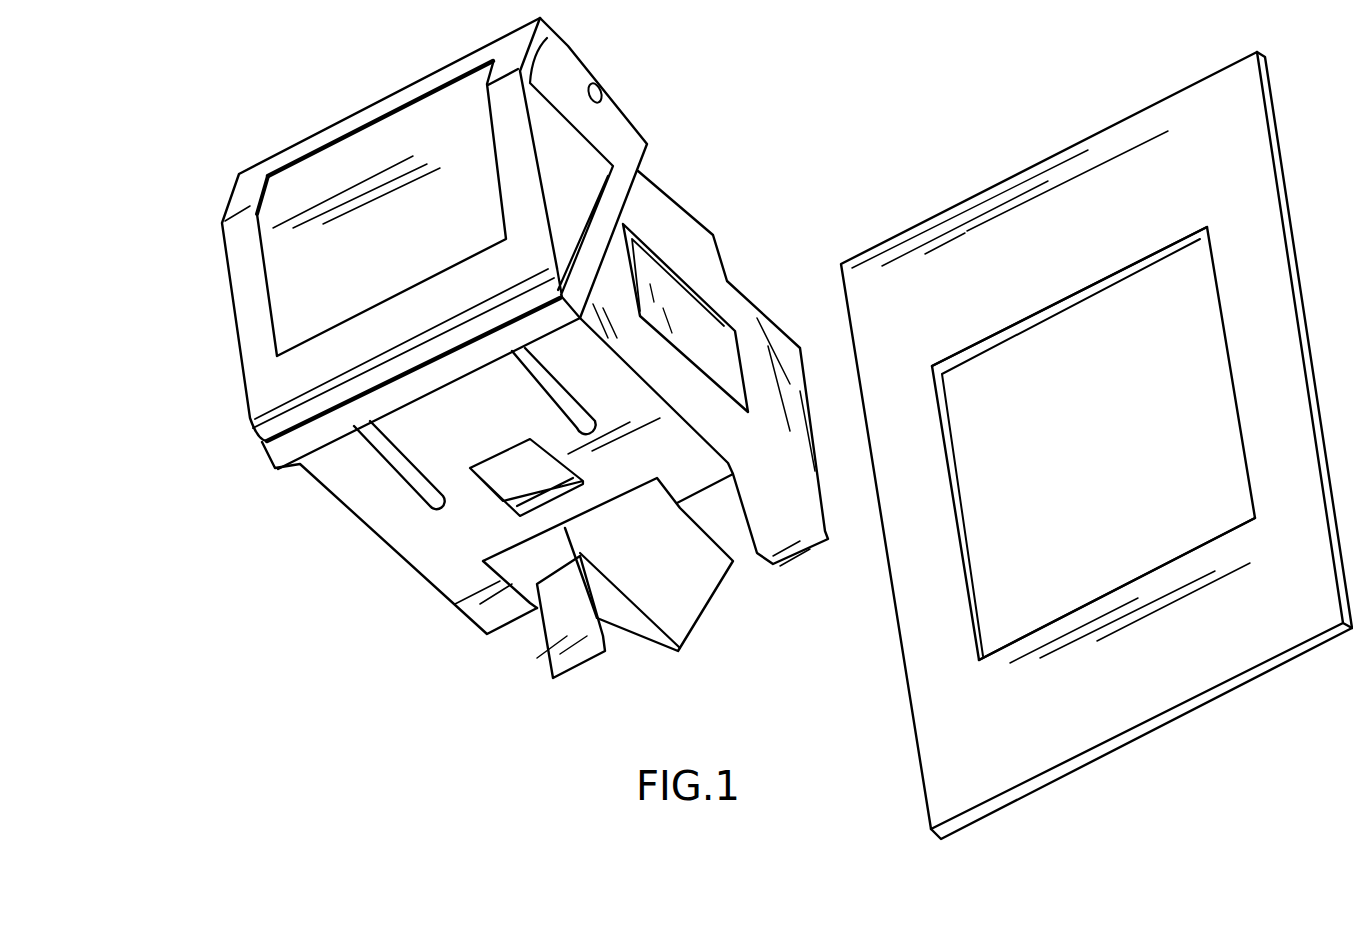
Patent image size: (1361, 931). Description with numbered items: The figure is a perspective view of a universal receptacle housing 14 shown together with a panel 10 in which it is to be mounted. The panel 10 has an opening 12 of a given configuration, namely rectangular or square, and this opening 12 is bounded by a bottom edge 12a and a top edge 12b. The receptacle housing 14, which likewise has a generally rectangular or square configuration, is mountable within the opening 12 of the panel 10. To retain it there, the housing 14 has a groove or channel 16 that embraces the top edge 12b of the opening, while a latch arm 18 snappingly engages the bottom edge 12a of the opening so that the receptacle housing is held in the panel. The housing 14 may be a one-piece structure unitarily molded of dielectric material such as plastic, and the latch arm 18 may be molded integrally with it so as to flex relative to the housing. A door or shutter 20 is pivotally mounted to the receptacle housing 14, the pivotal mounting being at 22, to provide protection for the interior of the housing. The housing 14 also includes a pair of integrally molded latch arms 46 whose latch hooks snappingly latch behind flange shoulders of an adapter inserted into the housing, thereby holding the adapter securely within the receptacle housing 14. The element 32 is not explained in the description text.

The panel 10 is at (1125, 120).
The opening 12 is at (1210, 289).
The bottom edge 12a is at (1040, 618).
The top edge 12b is at (1202, 223).
The universal receptacle housing 14 is at (480, 606).
The groove or channel 16 is at (632, 163).
The latch arm 18 is at (402, 441).
The door or shutter 20 is at (280, 291).
The pivot 22 is at (589, 91).
The boss 32 is at (492, 493).
The latch arms 46 is at (657, 298).